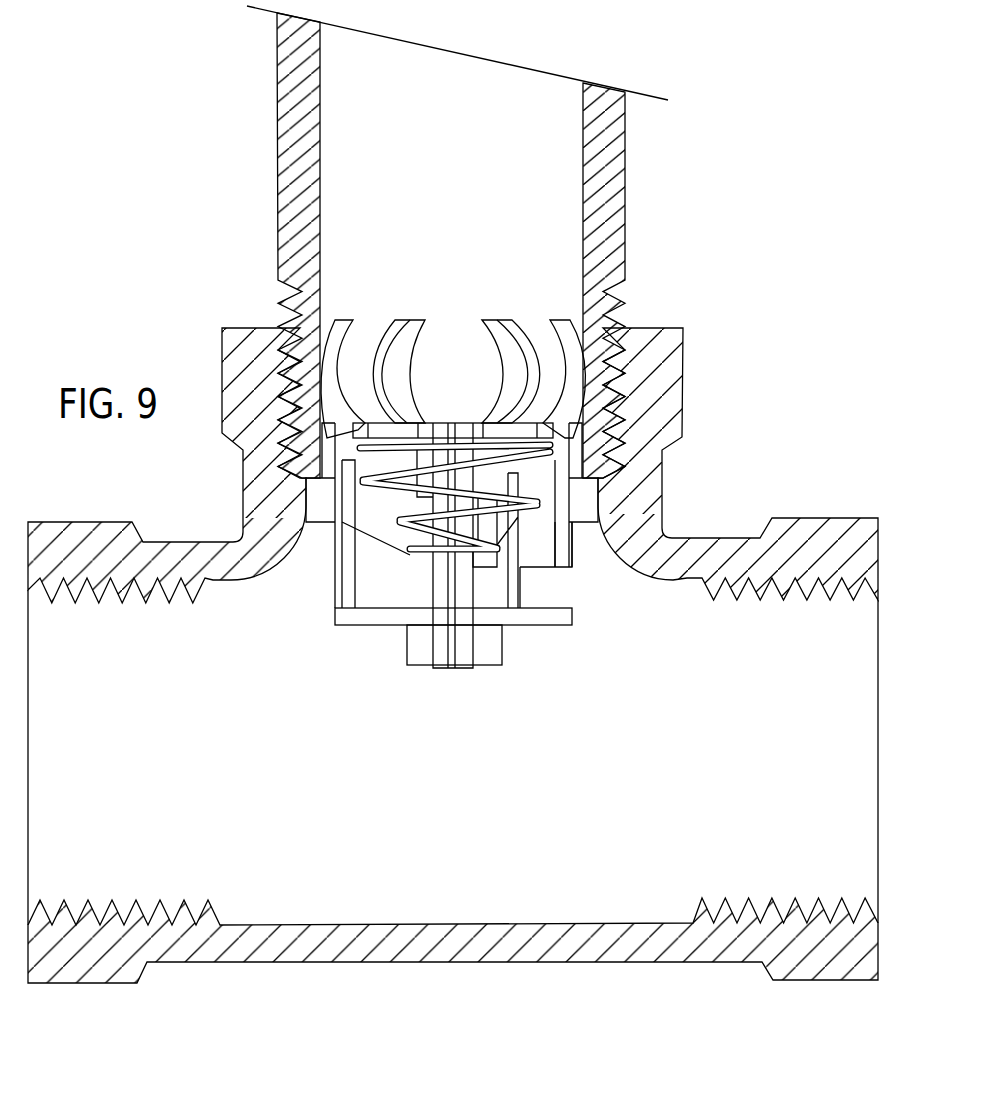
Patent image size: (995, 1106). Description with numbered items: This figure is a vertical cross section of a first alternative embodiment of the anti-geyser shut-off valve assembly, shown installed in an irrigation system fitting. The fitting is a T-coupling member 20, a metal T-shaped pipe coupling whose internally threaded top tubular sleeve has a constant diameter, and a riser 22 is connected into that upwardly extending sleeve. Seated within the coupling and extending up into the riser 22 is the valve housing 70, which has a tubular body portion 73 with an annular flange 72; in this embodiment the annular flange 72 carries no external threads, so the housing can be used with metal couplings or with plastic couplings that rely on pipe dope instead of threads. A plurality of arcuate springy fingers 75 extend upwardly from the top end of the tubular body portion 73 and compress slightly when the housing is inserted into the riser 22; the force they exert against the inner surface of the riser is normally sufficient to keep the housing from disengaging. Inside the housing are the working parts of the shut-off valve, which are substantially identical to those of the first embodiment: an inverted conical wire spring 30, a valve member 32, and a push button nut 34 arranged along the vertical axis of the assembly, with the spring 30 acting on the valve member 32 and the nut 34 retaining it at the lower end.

The T-coupling member 20 is at (455, 651).
The riser 22 is at (457, 160).
The inverted conical wire spring 30 is at (377, 490).
The valve member 32 is at (370, 628).
The push button nut 34 is at (490, 652).
The valve housing 70 is at (578, 543).
The annular flange 72 is at (586, 507).
The tubular body portion 73 is at (560, 553).
The arcuate springy fingers 75 is at (410, 333).